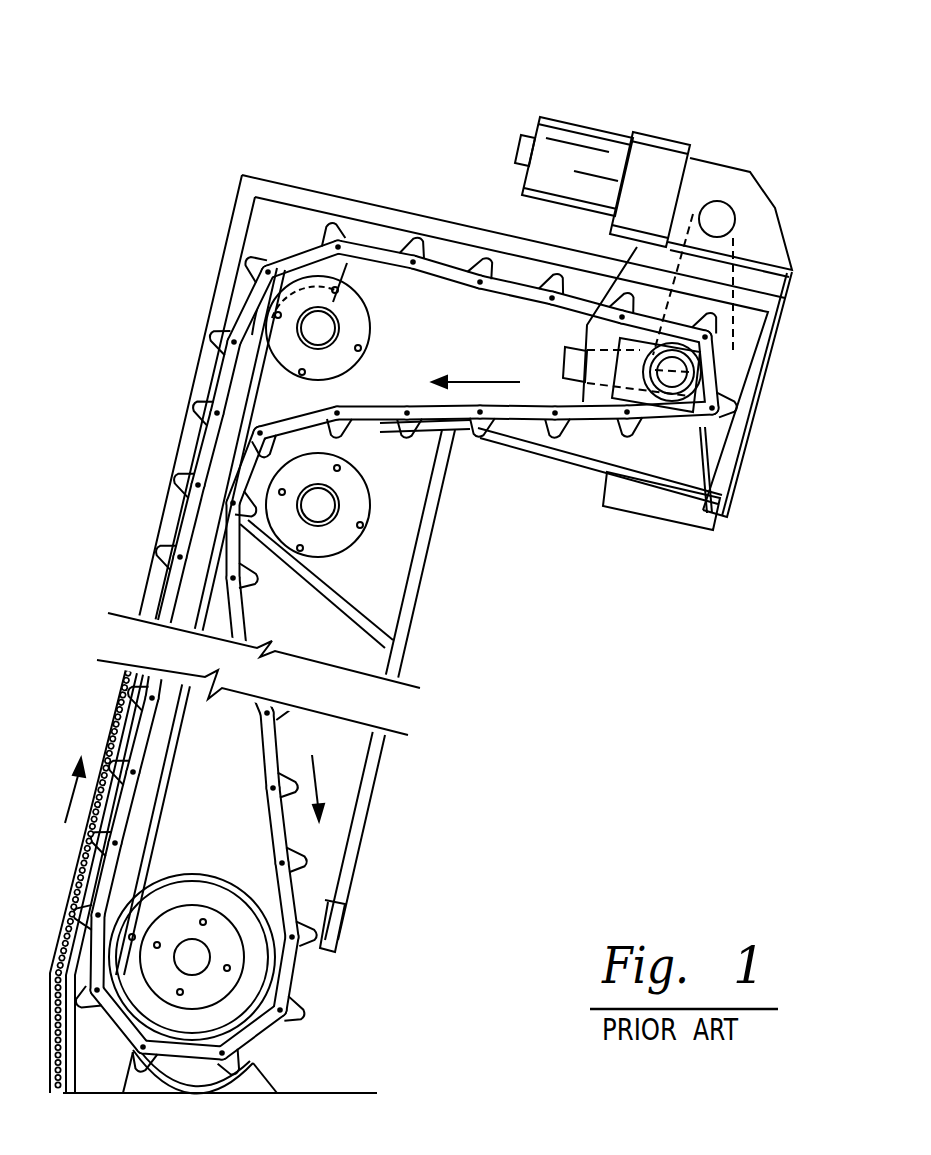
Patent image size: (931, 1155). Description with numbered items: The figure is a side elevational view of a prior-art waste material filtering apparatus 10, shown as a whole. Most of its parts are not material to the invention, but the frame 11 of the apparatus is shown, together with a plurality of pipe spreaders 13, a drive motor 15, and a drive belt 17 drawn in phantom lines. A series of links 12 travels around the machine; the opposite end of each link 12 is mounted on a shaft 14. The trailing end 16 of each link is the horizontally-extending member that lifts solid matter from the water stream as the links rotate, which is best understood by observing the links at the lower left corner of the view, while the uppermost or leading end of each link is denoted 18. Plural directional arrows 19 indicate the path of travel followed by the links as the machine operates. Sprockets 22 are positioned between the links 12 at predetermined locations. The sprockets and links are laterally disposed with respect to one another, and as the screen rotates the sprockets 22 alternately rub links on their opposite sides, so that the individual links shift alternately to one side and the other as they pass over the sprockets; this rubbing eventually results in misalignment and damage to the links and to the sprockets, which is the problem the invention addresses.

The waste material filtering apparatus 10 is at (251, 99).
The frame 11 is at (212, 305).
The link 12 is at (455, 285).
The pipe spreaders 13 is at (357, 363).
The shaft 14 is at (478, 287).
The drive motor 15 is at (577, 128).
The trailing end 16 is at (80, 902).
The drive belt 17 is at (740, 292).
The leading end 18 is at (110, 843).
The directional arrows 19 is at (497, 377).
The sprocket 22 is at (690, 364).